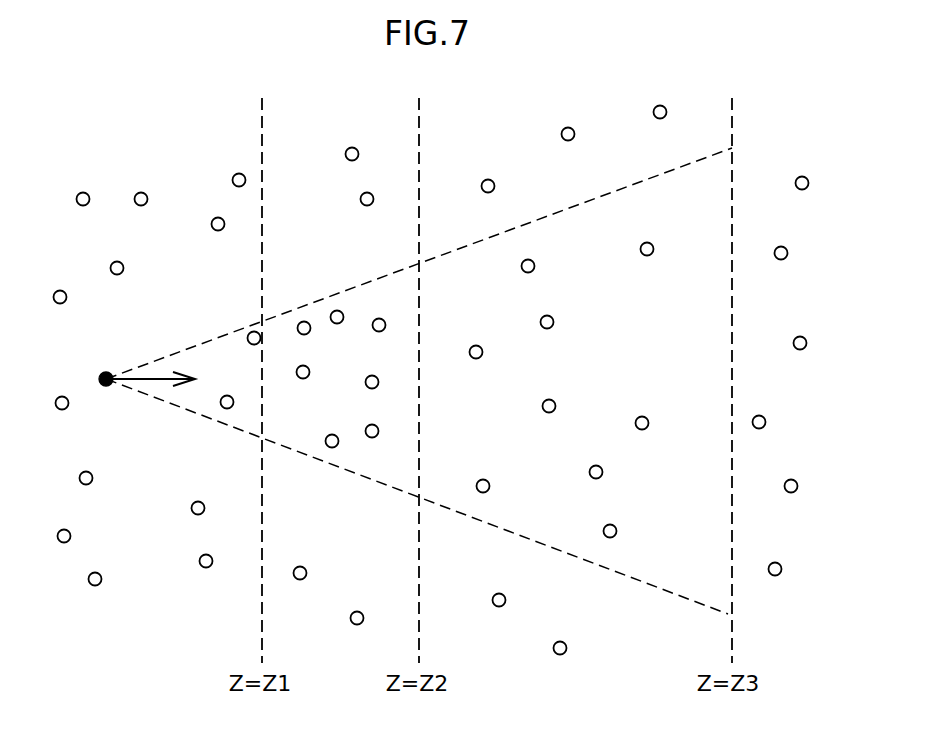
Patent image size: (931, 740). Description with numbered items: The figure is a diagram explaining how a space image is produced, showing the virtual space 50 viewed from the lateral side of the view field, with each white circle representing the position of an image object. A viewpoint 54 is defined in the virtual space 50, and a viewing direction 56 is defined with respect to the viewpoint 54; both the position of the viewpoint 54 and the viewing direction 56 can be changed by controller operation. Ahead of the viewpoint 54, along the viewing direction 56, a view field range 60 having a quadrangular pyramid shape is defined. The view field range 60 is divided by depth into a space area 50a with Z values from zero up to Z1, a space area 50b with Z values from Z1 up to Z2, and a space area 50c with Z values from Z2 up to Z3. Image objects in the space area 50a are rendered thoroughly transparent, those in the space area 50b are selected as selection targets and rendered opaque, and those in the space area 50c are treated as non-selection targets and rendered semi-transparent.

The virtual space 50 is at (120, 152).
The space area 50a is at (207, 390).
The space area 50b is at (298, 413).
The space area 50c is at (592, 313).
The viewpoint 54 is at (110, 373).
The viewing direction 56 is at (167, 375).
The view field range 60 is at (167, 403).